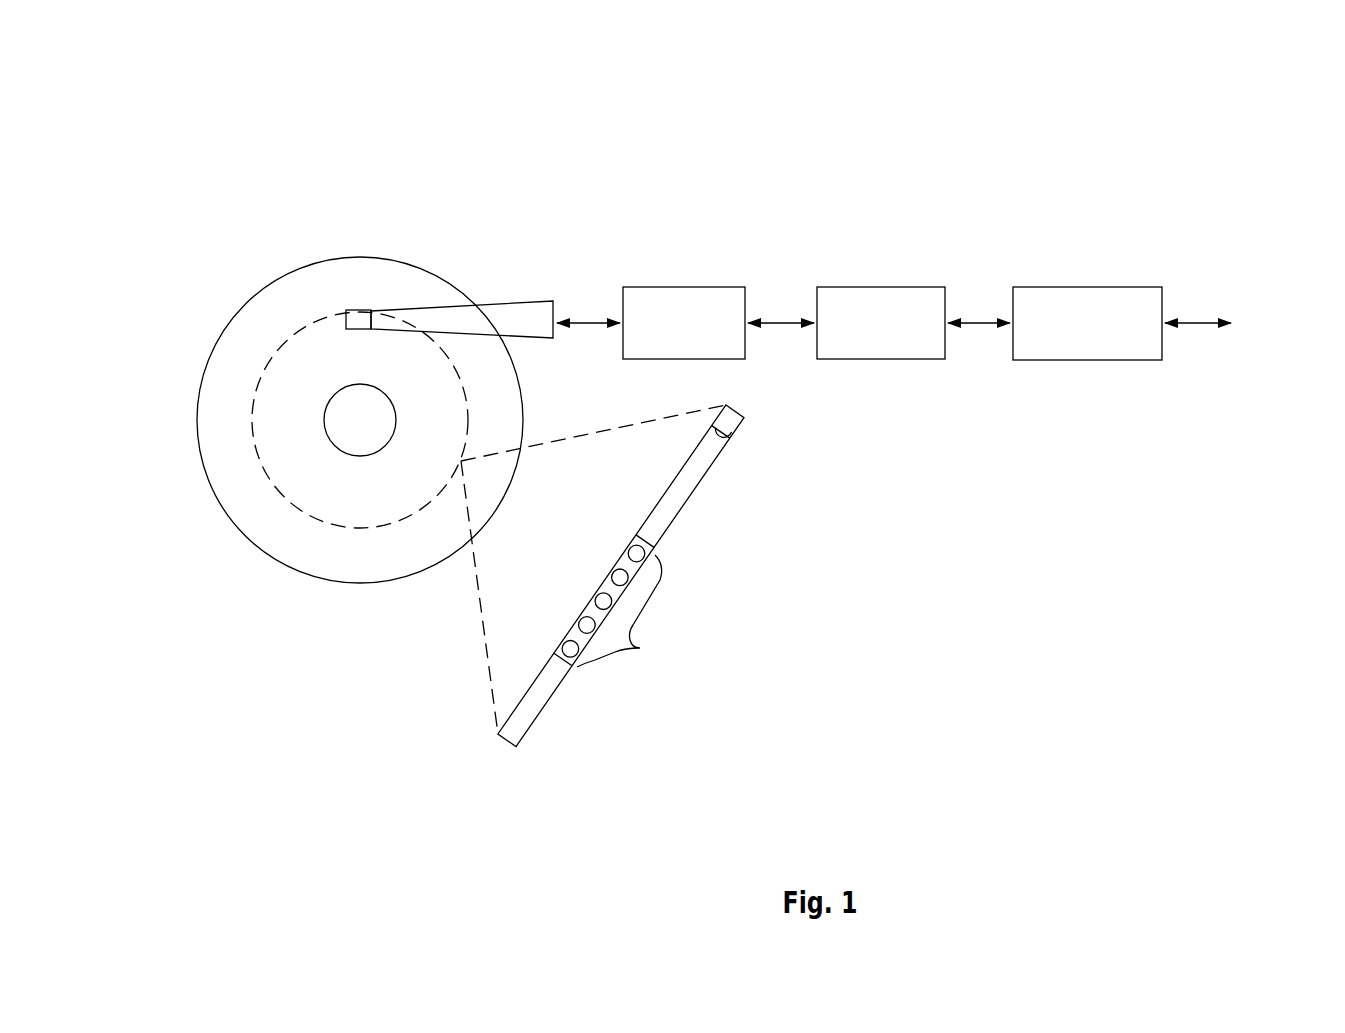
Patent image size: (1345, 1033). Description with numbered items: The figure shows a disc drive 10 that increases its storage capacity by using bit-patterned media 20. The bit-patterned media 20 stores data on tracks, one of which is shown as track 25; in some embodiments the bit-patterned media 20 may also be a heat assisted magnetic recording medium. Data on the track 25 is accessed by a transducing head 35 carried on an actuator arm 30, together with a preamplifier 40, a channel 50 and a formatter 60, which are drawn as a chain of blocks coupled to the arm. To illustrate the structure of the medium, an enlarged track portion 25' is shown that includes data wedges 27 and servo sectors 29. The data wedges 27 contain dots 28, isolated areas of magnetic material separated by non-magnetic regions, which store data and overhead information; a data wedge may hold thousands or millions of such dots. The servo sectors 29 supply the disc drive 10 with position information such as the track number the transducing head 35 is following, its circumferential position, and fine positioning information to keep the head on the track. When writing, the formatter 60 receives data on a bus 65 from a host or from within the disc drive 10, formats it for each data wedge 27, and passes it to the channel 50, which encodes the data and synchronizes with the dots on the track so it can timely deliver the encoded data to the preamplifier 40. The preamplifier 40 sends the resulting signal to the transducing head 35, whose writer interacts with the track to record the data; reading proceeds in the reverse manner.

The disc drive 10 is at (1206, 130).
The bit-patterned media 20 is at (276, 276).
The track 25 is at (315, 464).
The track portion 25' is at (586, 630).
The data wedge 27 is at (602, 581).
The dots 28 is at (630, 611).
The servo sector 29 is at (742, 422).
The actuator arm 30 is at (517, 298).
The transducing head 35 is at (346, 310).
The preamplifier 40 is at (695, 286).
The channel 50 is at (877, 286).
The formatter 60 is at (1093, 286).
The bus 65 is at (1197, 325).